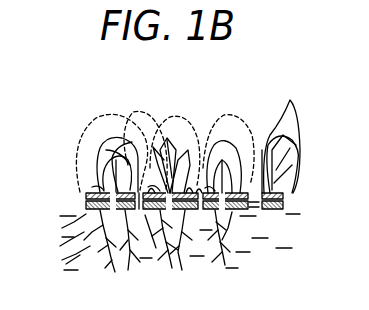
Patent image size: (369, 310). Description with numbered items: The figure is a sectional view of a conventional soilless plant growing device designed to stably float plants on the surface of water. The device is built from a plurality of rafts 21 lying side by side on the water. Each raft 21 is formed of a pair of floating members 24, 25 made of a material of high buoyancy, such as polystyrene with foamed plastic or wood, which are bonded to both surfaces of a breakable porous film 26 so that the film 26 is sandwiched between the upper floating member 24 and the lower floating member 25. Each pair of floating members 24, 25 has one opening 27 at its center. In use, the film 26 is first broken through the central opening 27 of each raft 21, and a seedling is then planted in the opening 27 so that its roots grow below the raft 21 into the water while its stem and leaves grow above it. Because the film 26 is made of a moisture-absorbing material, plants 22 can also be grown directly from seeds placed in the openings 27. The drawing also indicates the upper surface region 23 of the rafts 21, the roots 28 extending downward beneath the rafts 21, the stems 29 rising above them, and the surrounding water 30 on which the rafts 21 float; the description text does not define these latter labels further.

The raft 21 is at (256, 221).
The plants 22 is at (138, 192).
The upper sheet layer 23 is at (85, 194).
The floating member 24 is at (85, 206).
The floating member 25 is at (190, 192).
The breakable porous film 26 is at (140, 205).
The opening 27 is at (96, 192).
The roots 28 is at (92, 246).
The stems 29 is at (266, 140).
The nutrient solution 30 is at (90, 220).